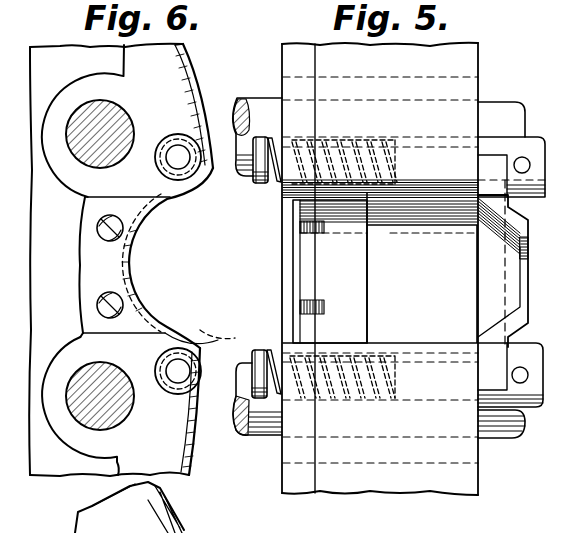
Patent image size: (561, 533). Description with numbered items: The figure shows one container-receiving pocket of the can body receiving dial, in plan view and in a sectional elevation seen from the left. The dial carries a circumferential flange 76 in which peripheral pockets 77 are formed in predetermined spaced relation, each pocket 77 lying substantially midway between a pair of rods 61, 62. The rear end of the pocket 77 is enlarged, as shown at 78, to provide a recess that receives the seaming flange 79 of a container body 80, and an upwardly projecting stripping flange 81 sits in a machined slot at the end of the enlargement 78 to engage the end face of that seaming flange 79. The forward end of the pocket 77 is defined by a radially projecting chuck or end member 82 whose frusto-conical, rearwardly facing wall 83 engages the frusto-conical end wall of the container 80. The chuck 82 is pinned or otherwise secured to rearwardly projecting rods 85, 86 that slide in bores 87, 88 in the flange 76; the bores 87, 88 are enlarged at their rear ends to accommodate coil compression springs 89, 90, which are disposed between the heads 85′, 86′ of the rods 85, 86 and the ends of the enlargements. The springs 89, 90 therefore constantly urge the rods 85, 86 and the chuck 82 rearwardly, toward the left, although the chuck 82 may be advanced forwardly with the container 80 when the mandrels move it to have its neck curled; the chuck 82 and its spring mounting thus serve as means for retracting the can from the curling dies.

In FIG. 6, the rod 61 is at (90, 118).
In FIG. 5, the rod 61 is at (262, 107).
In FIG. 6, the rod 62 is at (95, 398).
In FIG. 5, the rod 62 is at (262, 424).
In FIG. 6, the circumferential flange 76 is at (175, 66).
In FIG. 5, the circumferential flange 76 is at (465, 63).
In FIG. 6, the peripheral pocket 77 is at (180, 199).
In FIG. 5, the peripheral pocket 77 is at (420, 343).
In FIG. 6, the enlargement 78 is at (150, 224).
In FIG. 5, the enlargement 78 is at (343, 343).
In FIG. 6, the seaming flange 79 is at (210, 337).
In FIG. 6, the container body 80 is at (220, 337).
In FIG. 6, the stripping flange 81 is at (130, 253).
In FIG. 5, the stripping flange 81 is at (283, 267).
In FIG. 5, the chuck or end member 82 is at (488, 356).
In FIG. 5, the frusto-conical rearwardly facing wall 83 is at (493, 249).
In FIG. 5, the rod 85 is at (372, 139).
In FIG. 6, the head of rod 85′ is at (180, 136).
In FIG. 5, the head of rod 85′ is at (258, 191).
In FIG. 5, the rod 86 is at (365, 400).
In FIG. 6, the head of rod 86′ is at (164, 394).
In FIG. 5, the head of rod 86′ is at (270, 333).
In FIG. 5, the bore 87 is at (452, 132).
In FIG. 5, the bore 88 is at (412, 398).
In FIG. 5, the coil compression spring 89 is at (350, 130).
In FIG. 5, the coil compression spring 90 is at (340, 400).